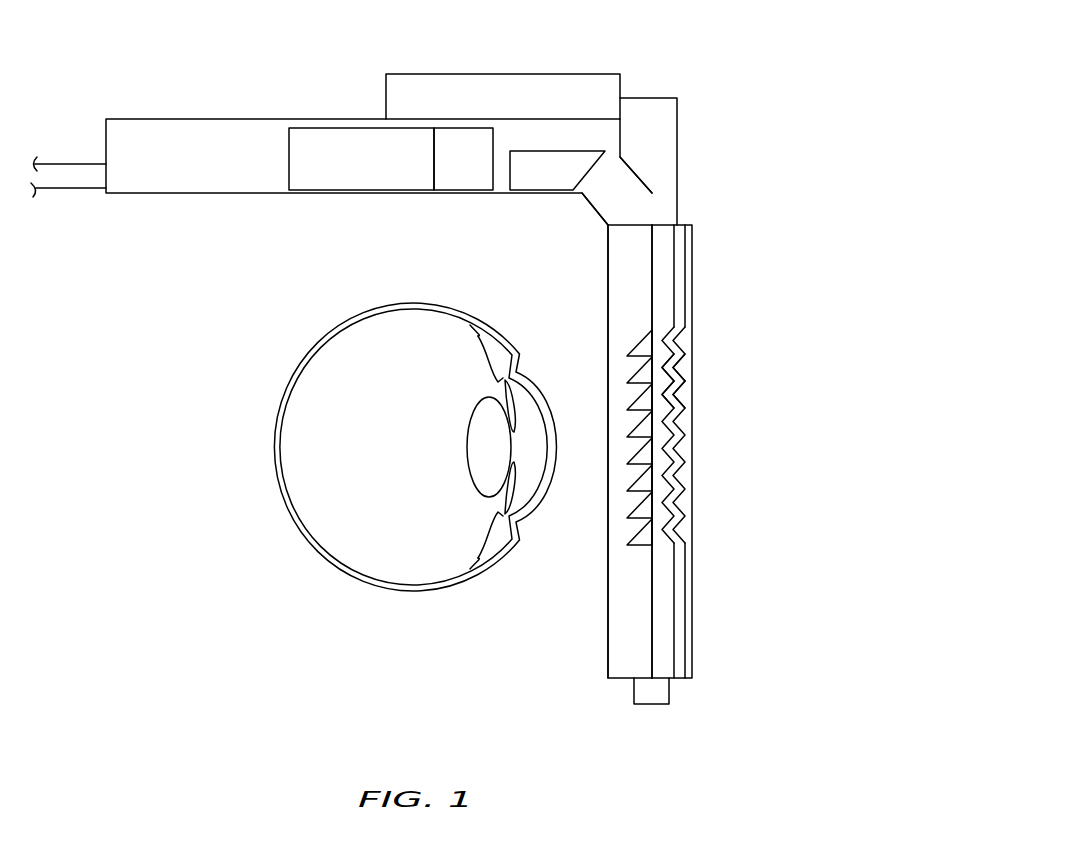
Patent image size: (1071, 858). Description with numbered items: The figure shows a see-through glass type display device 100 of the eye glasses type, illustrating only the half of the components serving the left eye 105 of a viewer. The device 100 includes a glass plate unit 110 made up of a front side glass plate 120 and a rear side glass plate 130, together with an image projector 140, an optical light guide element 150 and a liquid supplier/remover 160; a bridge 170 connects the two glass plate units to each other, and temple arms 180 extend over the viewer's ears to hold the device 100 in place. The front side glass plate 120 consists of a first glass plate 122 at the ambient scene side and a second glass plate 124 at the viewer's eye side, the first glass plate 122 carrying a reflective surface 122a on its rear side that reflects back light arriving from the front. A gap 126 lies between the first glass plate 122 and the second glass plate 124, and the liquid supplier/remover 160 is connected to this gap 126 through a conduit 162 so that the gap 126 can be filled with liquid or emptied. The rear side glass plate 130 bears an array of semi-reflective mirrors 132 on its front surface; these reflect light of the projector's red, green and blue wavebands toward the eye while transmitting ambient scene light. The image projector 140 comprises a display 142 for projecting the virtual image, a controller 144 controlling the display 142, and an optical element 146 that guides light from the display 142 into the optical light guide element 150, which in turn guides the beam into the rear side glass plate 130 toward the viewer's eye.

The device 100 is at (738, 64).
The left eye 105 is at (288, 385).
The glass plate unit 110 is at (703, 672).
The front side glass plate 120 is at (693, 607).
The first glass plate 122 is at (688, 258).
The reflective surface 122a is at (682, 363).
The second glass plate 124 is at (665, 295).
The gap 126 is at (677, 438).
The rear side glass plate 130 is at (630, 600).
The semi-reflective mirrors 132 is at (648, 493).
The image projector 140 is at (237, 196).
The display 142 is at (458, 192).
The controller 144 is at (338, 192).
The optical element 146 is at (545, 192).
The optical light guide element 150 is at (607, 214).
The liquid supplier/remover 160 is at (384, 92).
The conduit 162 is at (677, 144).
The bridge 170 is at (650, 708).
The temple arms 180 is at (73, 190).